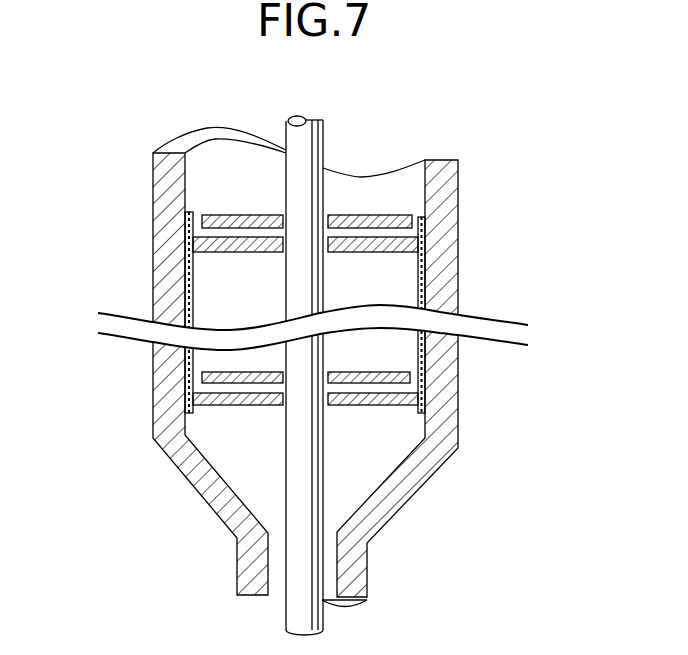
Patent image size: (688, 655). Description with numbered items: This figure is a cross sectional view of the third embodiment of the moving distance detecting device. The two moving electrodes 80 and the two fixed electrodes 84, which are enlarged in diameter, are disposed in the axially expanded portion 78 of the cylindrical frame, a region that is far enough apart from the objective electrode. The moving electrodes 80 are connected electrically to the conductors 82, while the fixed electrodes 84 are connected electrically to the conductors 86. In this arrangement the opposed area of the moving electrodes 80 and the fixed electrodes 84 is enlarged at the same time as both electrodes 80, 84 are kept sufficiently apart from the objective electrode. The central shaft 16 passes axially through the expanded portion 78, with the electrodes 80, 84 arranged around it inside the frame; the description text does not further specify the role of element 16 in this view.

The shaft 16 is at (297, 580).
The axially expanded portion 78 is at (443, 208).
The moving electrodes 80 is at (371, 218).
The conductors 82 is at (330, 352).
The fixed electrodes 84 is at (400, 260).
The conductors 86 is at (418, 290).